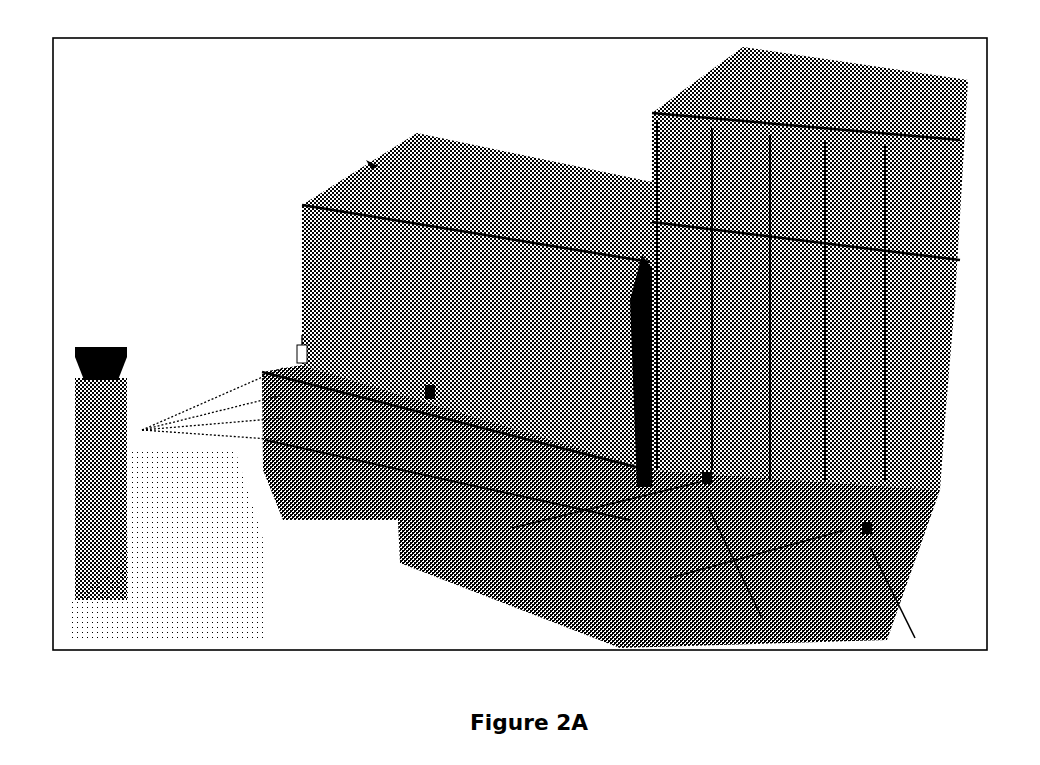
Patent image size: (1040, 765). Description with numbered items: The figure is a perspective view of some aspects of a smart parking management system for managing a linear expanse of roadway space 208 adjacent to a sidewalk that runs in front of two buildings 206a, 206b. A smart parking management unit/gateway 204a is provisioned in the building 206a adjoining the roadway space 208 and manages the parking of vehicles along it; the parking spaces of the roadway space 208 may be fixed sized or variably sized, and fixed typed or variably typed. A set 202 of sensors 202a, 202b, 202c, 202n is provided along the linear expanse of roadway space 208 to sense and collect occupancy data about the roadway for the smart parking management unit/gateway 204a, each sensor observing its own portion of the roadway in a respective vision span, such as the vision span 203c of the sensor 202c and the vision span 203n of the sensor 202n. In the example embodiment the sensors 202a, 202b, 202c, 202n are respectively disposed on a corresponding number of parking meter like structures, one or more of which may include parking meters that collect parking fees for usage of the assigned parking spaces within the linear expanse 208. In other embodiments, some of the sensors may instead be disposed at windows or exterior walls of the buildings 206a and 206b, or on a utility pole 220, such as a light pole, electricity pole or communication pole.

The set of sensors 202 is at (179, 437).
The sensor 202a is at (359, 305).
The sensor 202b is at (493, 346).
The sensor 202c is at (766, 437).
The sensor 202n is at (913, 483).
The vision span 203c is at (637, 550).
The vision span 203n is at (792, 584).
The smart parking management unit/gateway 204a is at (372, 165).
The building 206a is at (570, 210).
The building 206b is at (832, 121).
The linear expanse of roadway space 208 is at (360, 553).
The utility pole 220 is at (733, 331).